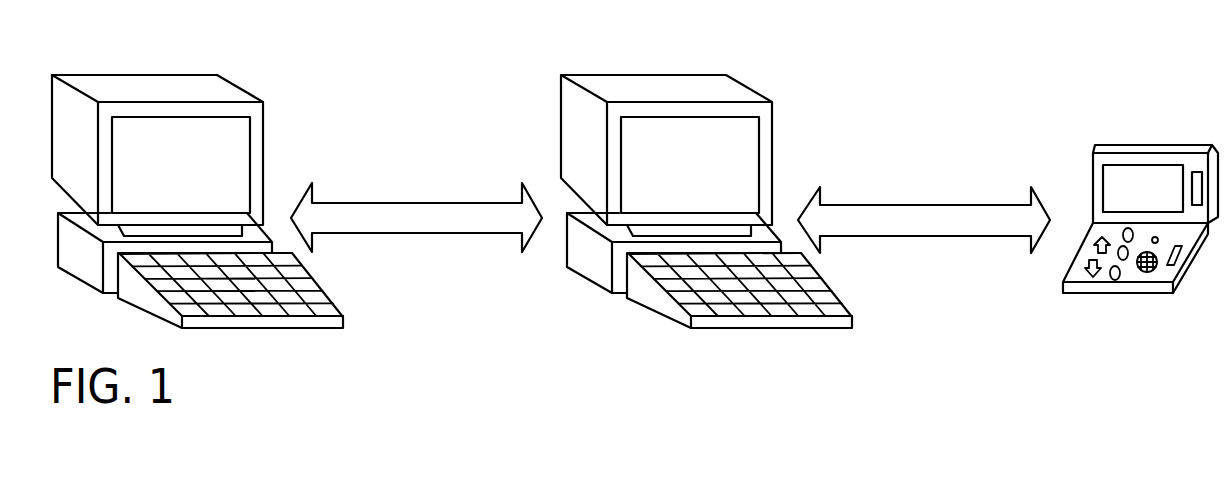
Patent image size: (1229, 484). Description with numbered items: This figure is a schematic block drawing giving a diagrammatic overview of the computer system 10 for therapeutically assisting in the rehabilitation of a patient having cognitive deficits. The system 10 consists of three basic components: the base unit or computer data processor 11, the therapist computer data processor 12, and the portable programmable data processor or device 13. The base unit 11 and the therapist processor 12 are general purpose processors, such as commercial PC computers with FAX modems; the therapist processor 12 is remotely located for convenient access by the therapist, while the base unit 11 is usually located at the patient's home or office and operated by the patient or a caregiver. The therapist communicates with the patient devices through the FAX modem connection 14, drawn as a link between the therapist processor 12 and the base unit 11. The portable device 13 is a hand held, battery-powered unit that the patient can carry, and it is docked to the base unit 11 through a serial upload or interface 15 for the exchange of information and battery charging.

The computer system 10 is at (457, 55).
The base unit 11 is at (763, 97).
The therapist computer data processor 12 is at (253, 96).
The portable programmable data processor 13 is at (1093, 173).
The FAX modem connection 14 is at (427, 233).
The serial upload 15 is at (948, 235).